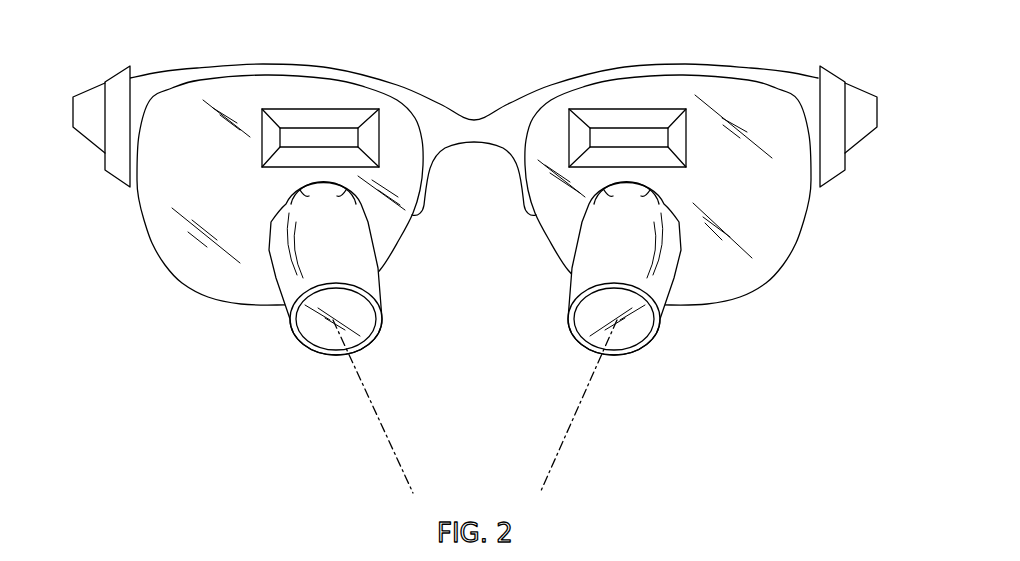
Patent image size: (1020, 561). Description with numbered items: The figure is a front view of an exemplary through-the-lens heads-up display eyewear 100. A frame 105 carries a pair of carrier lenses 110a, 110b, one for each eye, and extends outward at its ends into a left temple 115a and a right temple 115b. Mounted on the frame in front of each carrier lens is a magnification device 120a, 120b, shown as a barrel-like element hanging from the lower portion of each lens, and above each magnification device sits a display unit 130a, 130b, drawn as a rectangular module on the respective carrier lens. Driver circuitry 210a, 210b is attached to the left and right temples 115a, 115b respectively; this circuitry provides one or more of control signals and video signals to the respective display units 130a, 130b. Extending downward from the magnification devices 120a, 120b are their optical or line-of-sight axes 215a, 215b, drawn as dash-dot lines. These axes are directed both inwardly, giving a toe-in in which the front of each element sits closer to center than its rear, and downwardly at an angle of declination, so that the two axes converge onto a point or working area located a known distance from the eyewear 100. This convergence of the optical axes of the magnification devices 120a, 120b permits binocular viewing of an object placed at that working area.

The eyewear 100 is at (478, 250).
The frame 105 is at (210, 64).
The carrier lens 110a is at (198, 94).
The carrier lens 110b is at (749, 113).
The left temple 115a is at (88, 125).
The right temple 115b is at (862, 125).
The magnification device 120a is at (323, 354).
The magnification device 120b is at (627, 354).
The display unit 130a is at (312, 137).
The display unit 130b is at (638, 137).
The driver circuitry 210a is at (118, 87).
The driver circuitry 210b is at (832, 87).
The optical axis 215a is at (377, 412).
The optical axis 215b is at (571, 417).